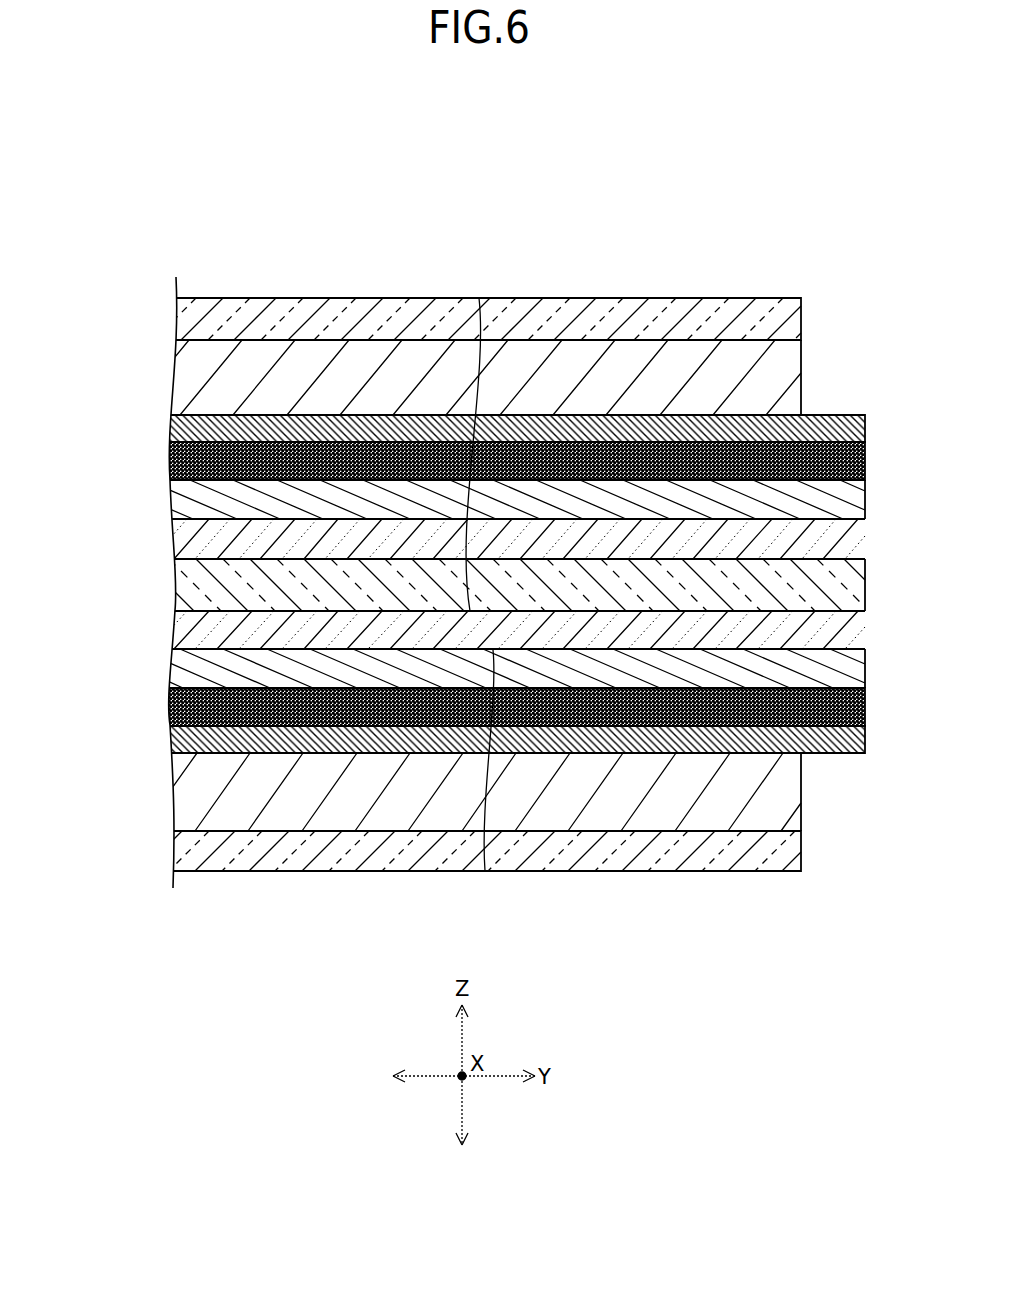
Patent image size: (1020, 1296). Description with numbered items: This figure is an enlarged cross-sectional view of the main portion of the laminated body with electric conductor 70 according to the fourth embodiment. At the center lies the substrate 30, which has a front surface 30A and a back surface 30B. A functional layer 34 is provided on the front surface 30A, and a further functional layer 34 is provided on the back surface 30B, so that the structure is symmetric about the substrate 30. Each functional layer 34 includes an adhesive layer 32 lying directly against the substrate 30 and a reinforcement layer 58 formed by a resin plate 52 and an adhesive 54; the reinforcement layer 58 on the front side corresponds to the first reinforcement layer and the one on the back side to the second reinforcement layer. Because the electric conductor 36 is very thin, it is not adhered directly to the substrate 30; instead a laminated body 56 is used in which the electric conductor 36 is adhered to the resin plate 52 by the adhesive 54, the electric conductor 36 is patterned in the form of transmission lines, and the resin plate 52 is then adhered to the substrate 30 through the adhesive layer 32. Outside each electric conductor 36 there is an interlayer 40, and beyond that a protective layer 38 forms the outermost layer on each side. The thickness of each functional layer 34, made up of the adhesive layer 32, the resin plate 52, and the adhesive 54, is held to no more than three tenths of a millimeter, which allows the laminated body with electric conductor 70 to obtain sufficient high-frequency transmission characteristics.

The laminated body with electric conductor 70 is at (766, 248).
The substrate 30 is at (865, 585).
The front surface 30A is at (479, 298).
The back surface 30B is at (485, 871).
The adhesive layer 32 is at (865, 535).
The functional layer 34 is at (172, 725).
The electric conductor 36 is at (865, 428).
The protective layer 38 is at (801, 318).
The interlayer 40 is at (801, 358).
The resin plate 52 is at (865, 505).
The adhesive 54 is at (865, 465).
The laminated body 56 is at (172, 753).
The reinforcement layer 58 is at (166, 443).